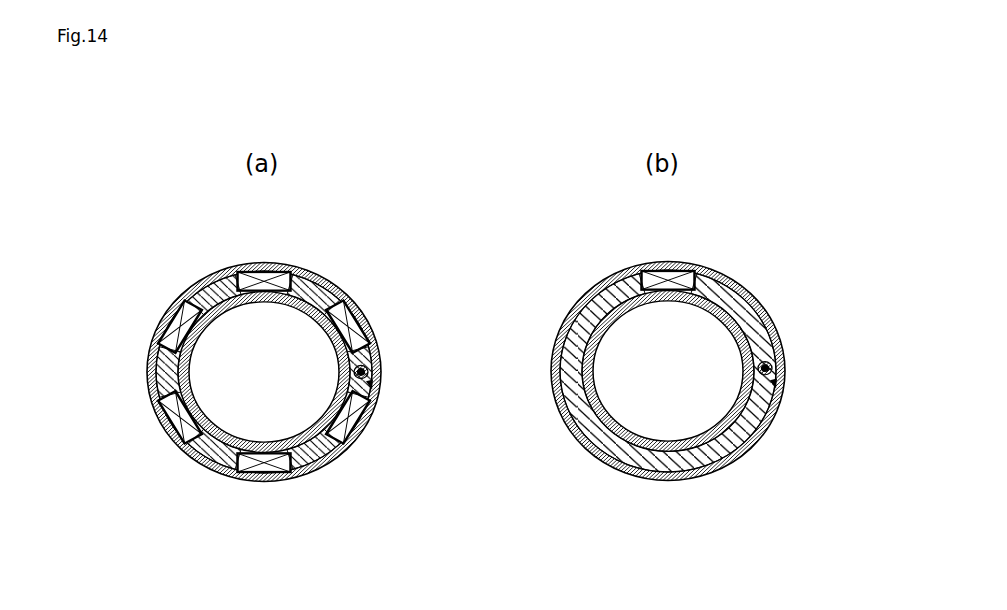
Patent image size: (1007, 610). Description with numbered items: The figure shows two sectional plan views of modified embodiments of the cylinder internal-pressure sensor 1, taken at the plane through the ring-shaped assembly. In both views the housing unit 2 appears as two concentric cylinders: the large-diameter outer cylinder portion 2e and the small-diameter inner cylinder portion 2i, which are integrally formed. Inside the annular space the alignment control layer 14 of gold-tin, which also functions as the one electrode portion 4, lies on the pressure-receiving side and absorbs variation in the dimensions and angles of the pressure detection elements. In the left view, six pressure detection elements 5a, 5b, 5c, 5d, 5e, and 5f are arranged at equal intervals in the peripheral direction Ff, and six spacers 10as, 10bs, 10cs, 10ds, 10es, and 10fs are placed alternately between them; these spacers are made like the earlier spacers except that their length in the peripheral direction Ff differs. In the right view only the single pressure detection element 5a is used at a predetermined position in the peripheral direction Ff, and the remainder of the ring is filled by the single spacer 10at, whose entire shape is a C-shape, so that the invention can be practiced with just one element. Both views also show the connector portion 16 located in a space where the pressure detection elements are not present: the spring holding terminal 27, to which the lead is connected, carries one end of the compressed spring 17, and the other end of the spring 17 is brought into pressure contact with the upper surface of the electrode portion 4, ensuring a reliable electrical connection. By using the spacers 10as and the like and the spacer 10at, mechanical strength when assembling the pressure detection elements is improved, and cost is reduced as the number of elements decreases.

The cylinder internal-pressure sensor 1 is at (378, 260).
The housing unit 2 is at (246, 488).
The outer cylinder portion 2e is at (205, 269).
The inner cylinder portion 2i is at (193, 470).
The electrode portion 4 is at (277, 296).
The pressure detection element 5a is at (160, 333).
The pressure detection element 5b is at (262, 268).
The pressure detection element 5c is at (363, 307).
The pressure detection element 5d is at (363, 427).
The pressure detection element 5e is at (278, 485).
The pressure detection element 5f is at (157, 428).
The spacer 10as is at (220, 267).
The spacer 10bs is at (325, 268).
The spacer 10cs is at (378, 354).
The spacer 10ds is at (330, 470).
The spacer 10es is at (203, 475).
The spacer 10fs is at (150, 382).
The spacer 10at is at (578, 302).
The alignment control layer 14 is at (190, 390).
The connector portion 16 is at (377, 393).
The spring 17 is at (370, 364).
The spring holding terminal 27 is at (377, 376).
The peripheral direction Ff is at (175, 276).